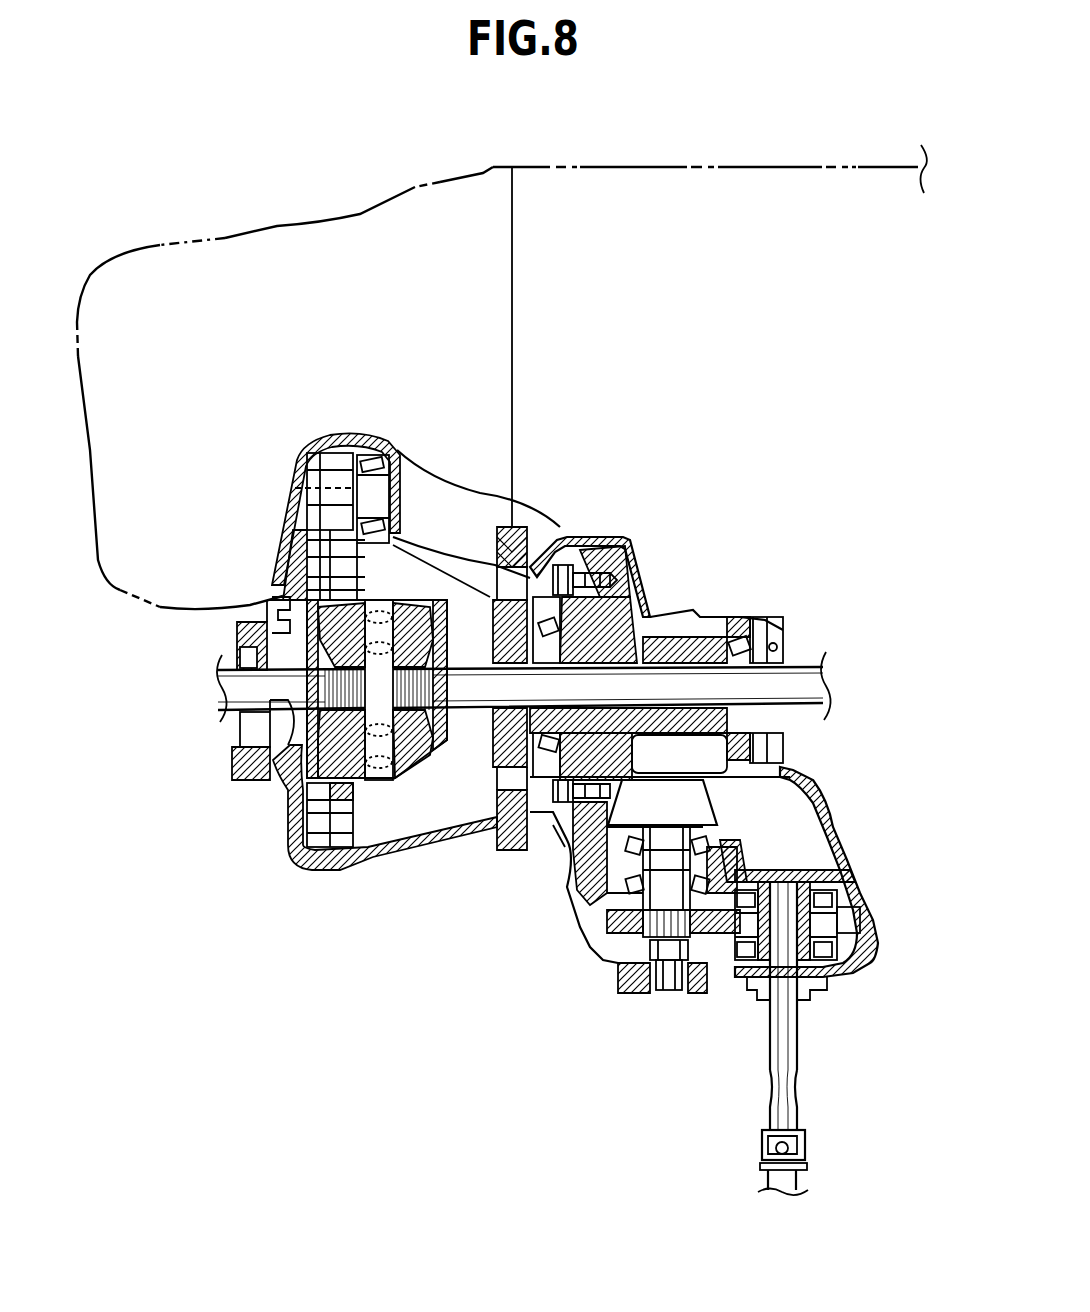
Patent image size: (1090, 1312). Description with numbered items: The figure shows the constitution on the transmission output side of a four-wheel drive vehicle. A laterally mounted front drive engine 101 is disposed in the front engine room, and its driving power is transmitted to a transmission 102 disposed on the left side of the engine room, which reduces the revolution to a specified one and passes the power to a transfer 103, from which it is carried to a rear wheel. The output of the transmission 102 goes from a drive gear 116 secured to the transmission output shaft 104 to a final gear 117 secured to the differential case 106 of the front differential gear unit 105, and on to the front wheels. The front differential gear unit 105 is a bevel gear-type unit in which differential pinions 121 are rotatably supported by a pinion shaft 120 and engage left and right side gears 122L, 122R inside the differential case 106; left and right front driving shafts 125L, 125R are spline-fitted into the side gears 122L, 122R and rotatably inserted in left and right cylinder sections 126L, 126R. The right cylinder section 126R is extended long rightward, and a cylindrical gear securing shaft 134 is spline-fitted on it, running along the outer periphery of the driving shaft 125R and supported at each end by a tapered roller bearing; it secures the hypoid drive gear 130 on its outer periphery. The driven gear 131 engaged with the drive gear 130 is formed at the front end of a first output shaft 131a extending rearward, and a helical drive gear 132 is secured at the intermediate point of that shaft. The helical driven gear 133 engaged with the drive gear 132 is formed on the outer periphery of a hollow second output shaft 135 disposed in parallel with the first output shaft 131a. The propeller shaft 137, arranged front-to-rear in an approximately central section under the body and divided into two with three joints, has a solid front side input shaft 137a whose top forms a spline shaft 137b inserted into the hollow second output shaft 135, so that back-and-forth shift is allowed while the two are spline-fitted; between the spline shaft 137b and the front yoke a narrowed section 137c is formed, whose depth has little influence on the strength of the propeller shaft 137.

The engine 101 is at (800, 167).
The transmission 102 is at (390, 200).
The transfer 103 is at (515, 1012).
The transmission output shaft 104 is at (295, 488).
The front differential gear unit 105 is at (388, 820).
The differential case 106 is at (428, 740).
The drive gear 116 is at (326, 450).
The final gear 117 is at (333, 848).
The pinion shaft 120 is at (400, 468).
The differential pinions 121 is at (400, 608).
The left side gear 122L is at (286, 793).
The right side gear 122R is at (420, 608).
The left front driving shaft 125L is at (216, 692).
The right front driving shaft 125R is at (805, 668).
The left cylinder section 126L is at (247, 773).
The right cylinder section 126R is at (548, 597).
The drive gear of the bevel gears 130 is at (632, 538).
The driven gear of the bevel gears 131 is at (717, 808).
The first output shaft 131a is at (672, 995).
The drive gear of the helical gears 132 is at (592, 955).
The driven gear of the helical gears 133 is at (870, 920).
The gear securing shaft 134 is at (655, 605).
The second output shaft 135 is at (840, 867).
The propeller shaft 137 is at (810, 1180).
The front side input shaft 137a is at (808, 1030).
The spline shaft 137b is at (840, 980).
The narrowed section 137c is at (800, 1087).